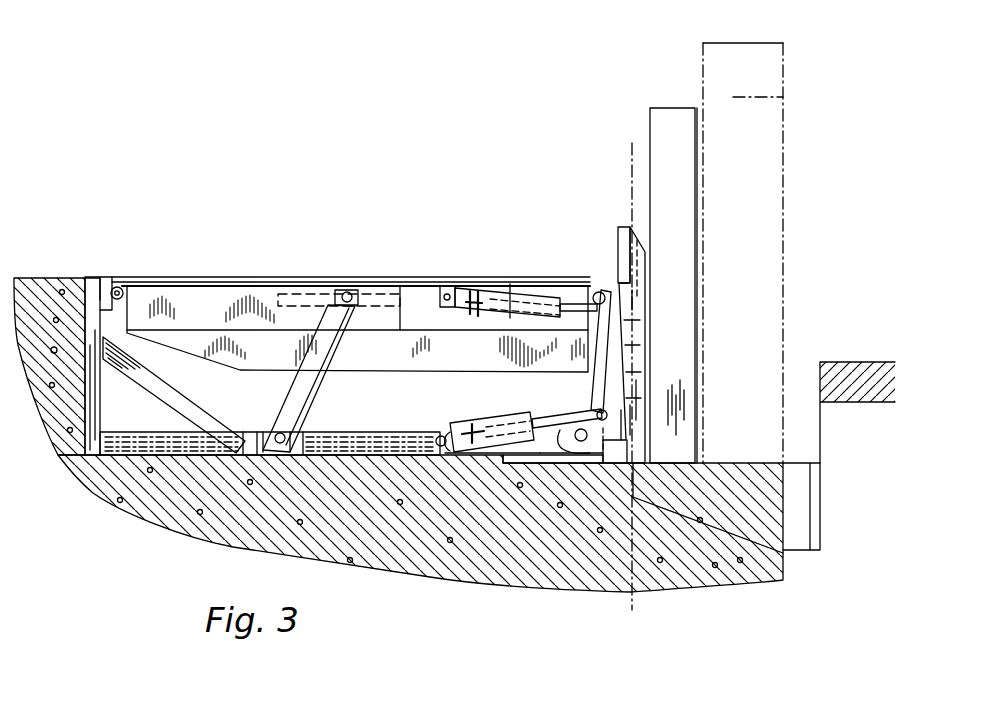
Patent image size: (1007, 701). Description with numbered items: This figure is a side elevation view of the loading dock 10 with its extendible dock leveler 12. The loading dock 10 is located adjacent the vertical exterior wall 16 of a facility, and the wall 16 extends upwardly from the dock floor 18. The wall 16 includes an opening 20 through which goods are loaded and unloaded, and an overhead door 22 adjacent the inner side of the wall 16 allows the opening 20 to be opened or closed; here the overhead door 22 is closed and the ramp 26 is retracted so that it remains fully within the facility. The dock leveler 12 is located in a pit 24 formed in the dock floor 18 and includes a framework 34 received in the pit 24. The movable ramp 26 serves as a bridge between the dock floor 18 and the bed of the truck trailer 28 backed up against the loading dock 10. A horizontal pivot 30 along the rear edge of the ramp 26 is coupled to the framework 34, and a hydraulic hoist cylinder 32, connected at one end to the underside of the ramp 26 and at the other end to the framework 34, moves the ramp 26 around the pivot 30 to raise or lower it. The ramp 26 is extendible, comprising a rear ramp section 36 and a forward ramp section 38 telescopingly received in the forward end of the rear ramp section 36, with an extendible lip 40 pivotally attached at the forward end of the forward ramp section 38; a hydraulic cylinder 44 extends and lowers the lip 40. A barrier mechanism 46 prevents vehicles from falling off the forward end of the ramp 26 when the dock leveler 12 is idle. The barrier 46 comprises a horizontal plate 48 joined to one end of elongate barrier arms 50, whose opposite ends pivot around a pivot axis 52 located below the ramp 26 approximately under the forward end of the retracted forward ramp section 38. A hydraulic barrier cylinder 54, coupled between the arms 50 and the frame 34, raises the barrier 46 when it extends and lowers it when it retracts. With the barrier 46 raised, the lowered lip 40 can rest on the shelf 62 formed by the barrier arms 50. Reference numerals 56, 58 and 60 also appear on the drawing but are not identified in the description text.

The loading dock 10 is at (855, 147).
The dock leveler 12 is at (318, 140).
The vertical exterior wall 16 is at (799, 62).
The dock floor 18 is at (63, 277).
The opening 20 is at (770, 96).
The overhead door 22 is at (650, 117).
The pit 24 is at (145, 452).
The ramp 26 is at (281, 276).
The truck trailer bed 28 is at (843, 360).
The horizontal pivot 30 is at (119, 287).
The hydraulic hoist cylinder 32 is at (292, 391).
The framework 34 is at (250, 457).
The rear ramp section 36 is at (211, 277).
The forward ramp section 38 is at (393, 282).
The extendible lip 40 is at (602, 353).
The hydraulic cylinder 44 is at (468, 296).
The barrier mechanism 46 is at (642, 246).
The horizontal plate 48 is at (617, 238).
The barrier arms 50 is at (630, 297).
The pivot axis 52 is at (546, 465).
The hydraulic barrier cylinder 54 is at (473, 422).
The pit 56 is at (625, 577).
The construction joint 58 is at (640, 470).
The anchor 60 is at (622, 463).
The shelf 62 is at (590, 408).